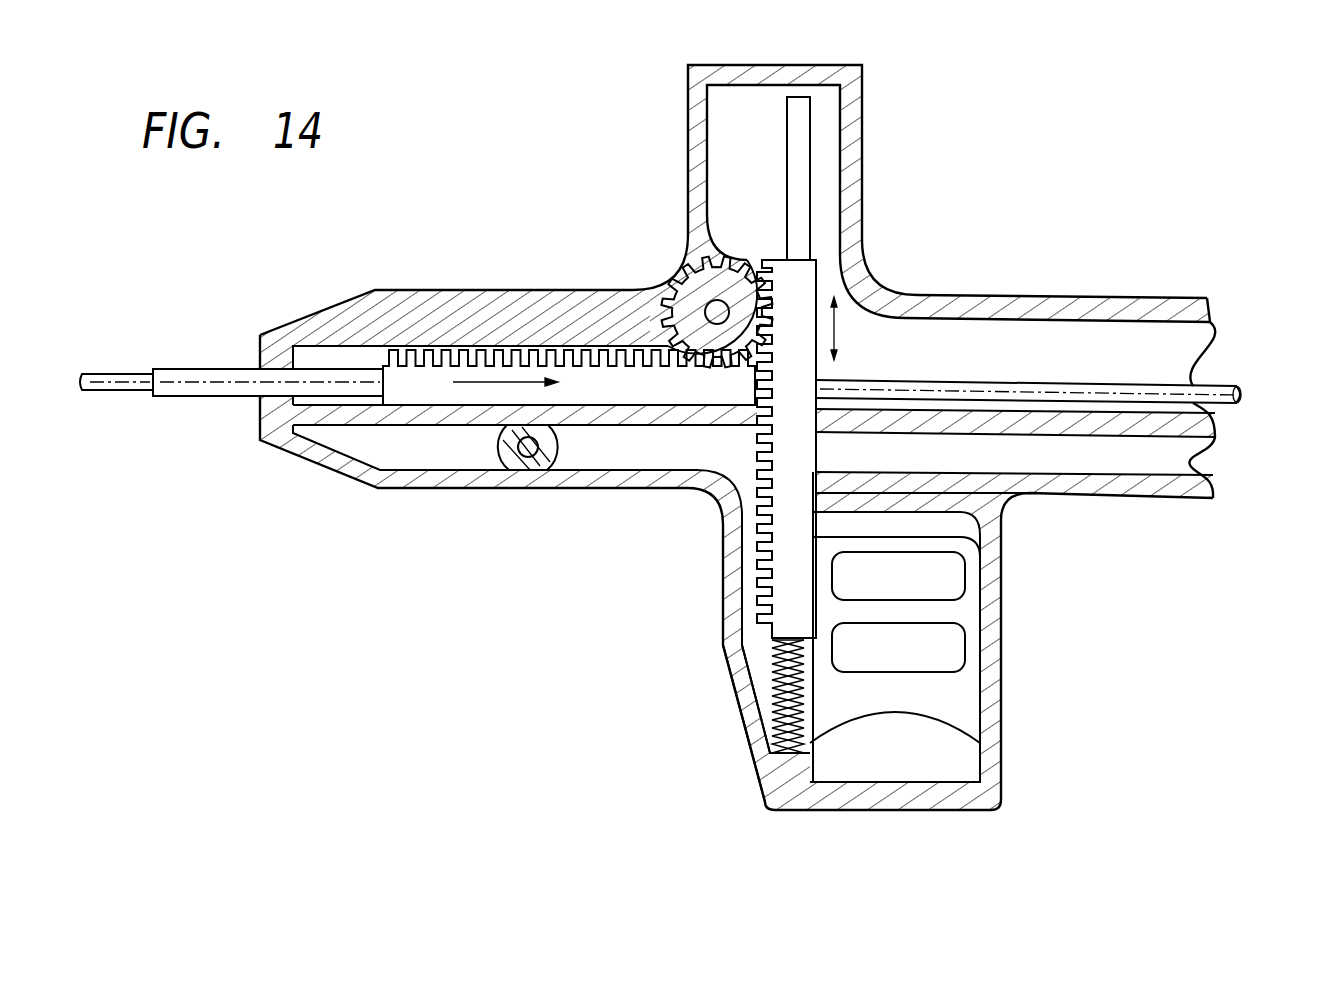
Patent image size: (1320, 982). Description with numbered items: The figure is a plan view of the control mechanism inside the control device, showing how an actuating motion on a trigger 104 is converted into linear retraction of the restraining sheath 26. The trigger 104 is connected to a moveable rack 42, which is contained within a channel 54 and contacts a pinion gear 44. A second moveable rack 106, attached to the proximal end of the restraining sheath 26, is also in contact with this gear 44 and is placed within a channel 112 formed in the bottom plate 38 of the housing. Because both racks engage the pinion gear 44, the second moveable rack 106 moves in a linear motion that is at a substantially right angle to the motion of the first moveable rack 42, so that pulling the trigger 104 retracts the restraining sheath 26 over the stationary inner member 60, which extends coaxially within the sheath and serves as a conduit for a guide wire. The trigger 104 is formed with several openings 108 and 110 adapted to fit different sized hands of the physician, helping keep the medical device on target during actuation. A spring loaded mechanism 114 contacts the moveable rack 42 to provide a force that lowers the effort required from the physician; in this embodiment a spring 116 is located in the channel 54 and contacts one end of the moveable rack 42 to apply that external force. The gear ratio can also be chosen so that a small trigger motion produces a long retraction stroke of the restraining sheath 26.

The restraining sheath 26 is at (200, 387).
The bottom plate 38 is at (413, 488).
The moveable rack 42 is at (797, 288).
The pinion gear 44 is at (740, 283).
The channel 54 is at (807, 165).
The inner member 60 is at (126, 372).
The trigger 104 is at (955, 692).
The second moveable rack 106 is at (414, 383).
The opening 108 is at (963, 652).
The opening 110 is at (963, 578).
The channel 112 is at (343, 352).
The spring loaded mechanism 114 is at (697, 692).
The spring 116 is at (768, 727).